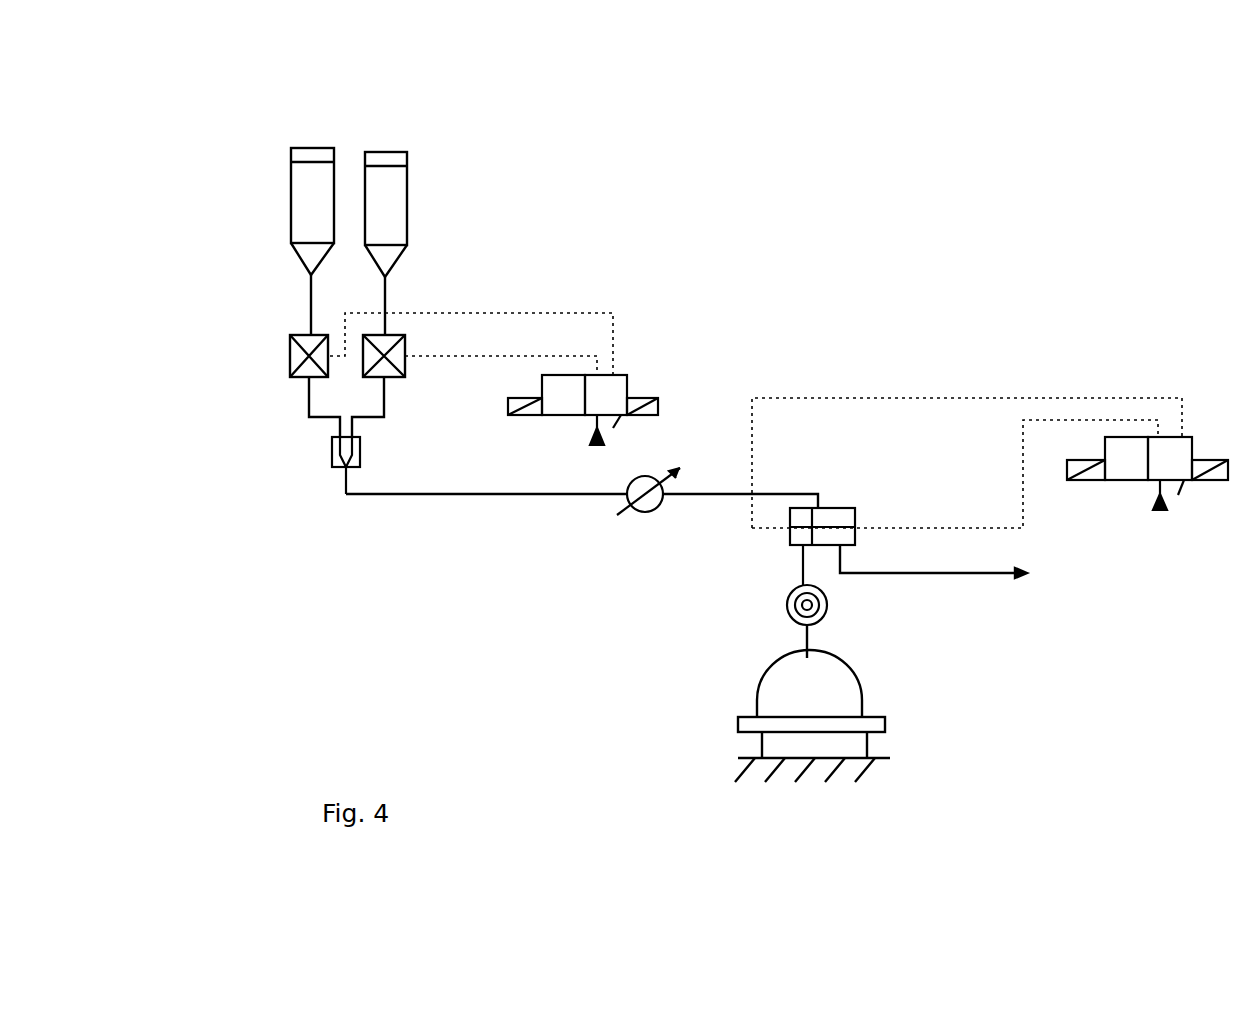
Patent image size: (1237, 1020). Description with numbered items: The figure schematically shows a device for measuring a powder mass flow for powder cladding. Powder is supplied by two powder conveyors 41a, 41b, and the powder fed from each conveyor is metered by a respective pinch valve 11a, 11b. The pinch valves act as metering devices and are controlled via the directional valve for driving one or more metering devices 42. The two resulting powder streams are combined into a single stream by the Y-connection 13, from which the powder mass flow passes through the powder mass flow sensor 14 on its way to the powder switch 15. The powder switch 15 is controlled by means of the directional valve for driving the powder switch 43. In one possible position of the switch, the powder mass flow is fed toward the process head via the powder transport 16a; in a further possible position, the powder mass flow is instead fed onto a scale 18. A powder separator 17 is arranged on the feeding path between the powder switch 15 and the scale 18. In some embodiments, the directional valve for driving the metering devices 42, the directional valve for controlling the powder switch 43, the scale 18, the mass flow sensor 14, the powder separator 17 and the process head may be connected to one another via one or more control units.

The powder conveyor 41a is at (305, 180).
The powder conveyor 41b is at (390, 195).
The pinch valve 11a is at (290, 365).
The pinch valve 11b is at (365, 367).
The Y-connection 13 is at (337, 467).
The powder mass flow sensor 14 is at (637, 512).
The powder switch 15 is at (833, 508).
The powder transport 16a is at (993, 578).
The powder separator 17 is at (787, 604).
The scale 18 is at (700, 731).
The directional valve for driving one or more metering devices 42 is at (597, 375).
The directional valve for driving the powder switch 43 is at (1170, 437).